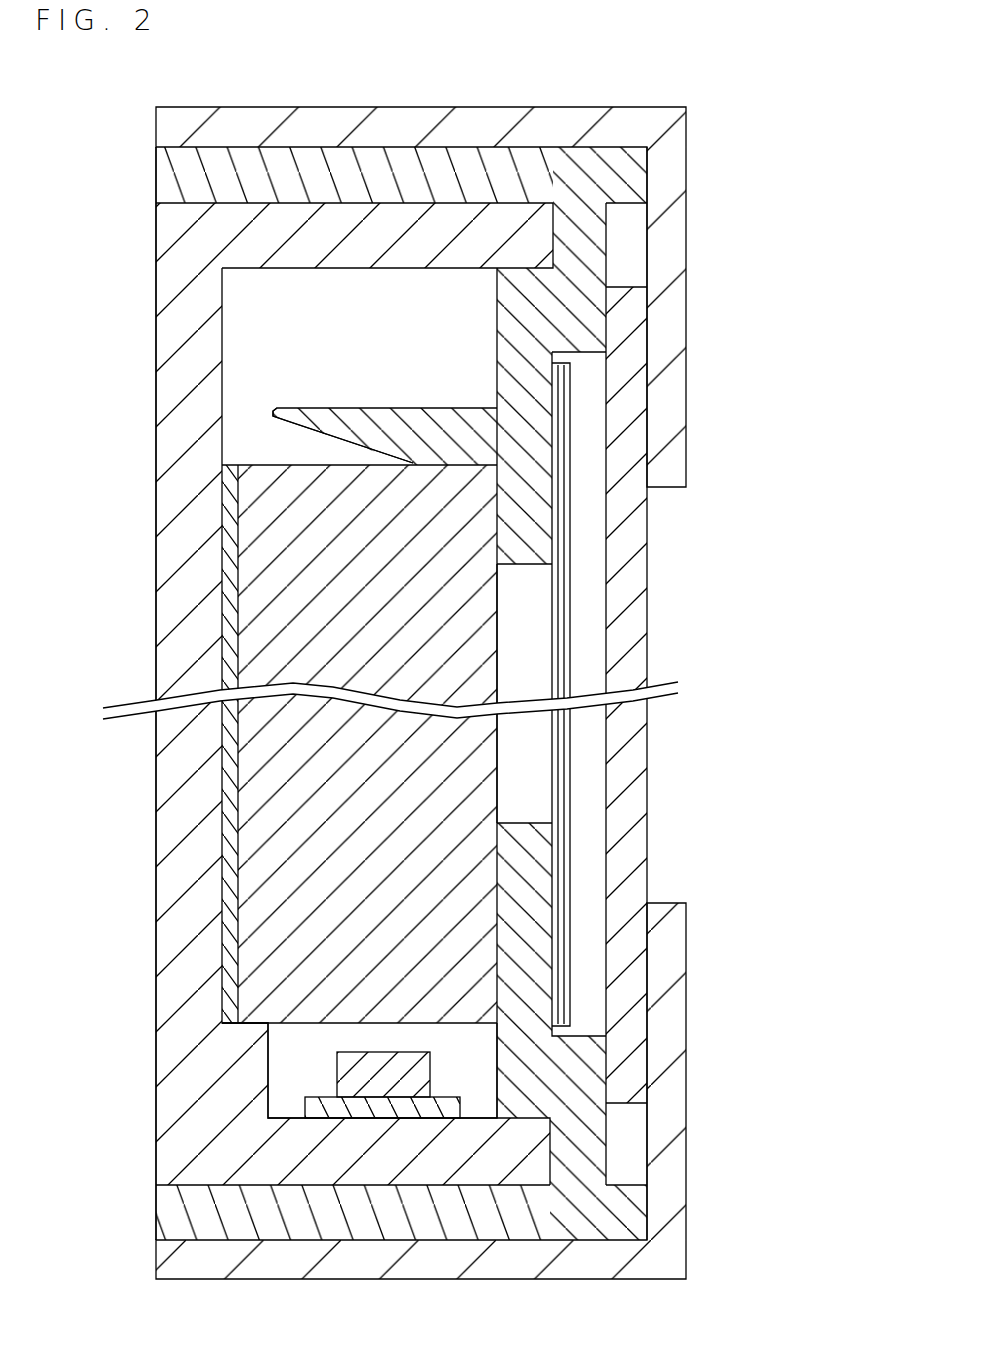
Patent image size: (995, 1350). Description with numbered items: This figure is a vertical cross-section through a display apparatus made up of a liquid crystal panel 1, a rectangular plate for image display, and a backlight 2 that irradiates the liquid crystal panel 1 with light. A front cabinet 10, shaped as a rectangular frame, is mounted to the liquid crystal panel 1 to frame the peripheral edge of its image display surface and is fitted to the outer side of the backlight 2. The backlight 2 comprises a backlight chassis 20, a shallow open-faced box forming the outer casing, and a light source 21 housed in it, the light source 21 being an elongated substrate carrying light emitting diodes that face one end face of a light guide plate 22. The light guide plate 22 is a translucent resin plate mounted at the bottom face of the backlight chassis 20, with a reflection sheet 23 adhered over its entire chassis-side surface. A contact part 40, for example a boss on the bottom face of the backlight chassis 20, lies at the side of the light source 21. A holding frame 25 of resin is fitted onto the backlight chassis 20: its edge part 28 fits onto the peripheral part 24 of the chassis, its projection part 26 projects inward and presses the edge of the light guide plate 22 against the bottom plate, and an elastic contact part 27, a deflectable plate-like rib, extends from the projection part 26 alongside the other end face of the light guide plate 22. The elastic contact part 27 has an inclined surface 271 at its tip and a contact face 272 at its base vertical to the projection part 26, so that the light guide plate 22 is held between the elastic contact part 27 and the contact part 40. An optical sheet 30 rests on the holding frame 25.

The liquid crystal panel 1 is at (647, 645).
The backlight 2 is at (146, 570).
The front cabinet 10 is at (688, 318).
The backlight chassis 20 is at (152, 880).
The light source 21 is at (430, 1071).
The light guide plate 22 is at (500, 752).
The reflection sheet 23 is at (218, 780).
The peripheral part 24 is at (278, 270).
The holding frame 25 is at (617, 237).
The projection part 26 is at (530, 565).
The elastic contact part 27 is at (347, 407).
The edge part 28 is at (165, 162).
The optical sheet 30 is at (566, 812).
The contact part 40 is at (281, 1047).
The inclined surface 271 is at (290, 430).
The contact face 272 is at (455, 466).